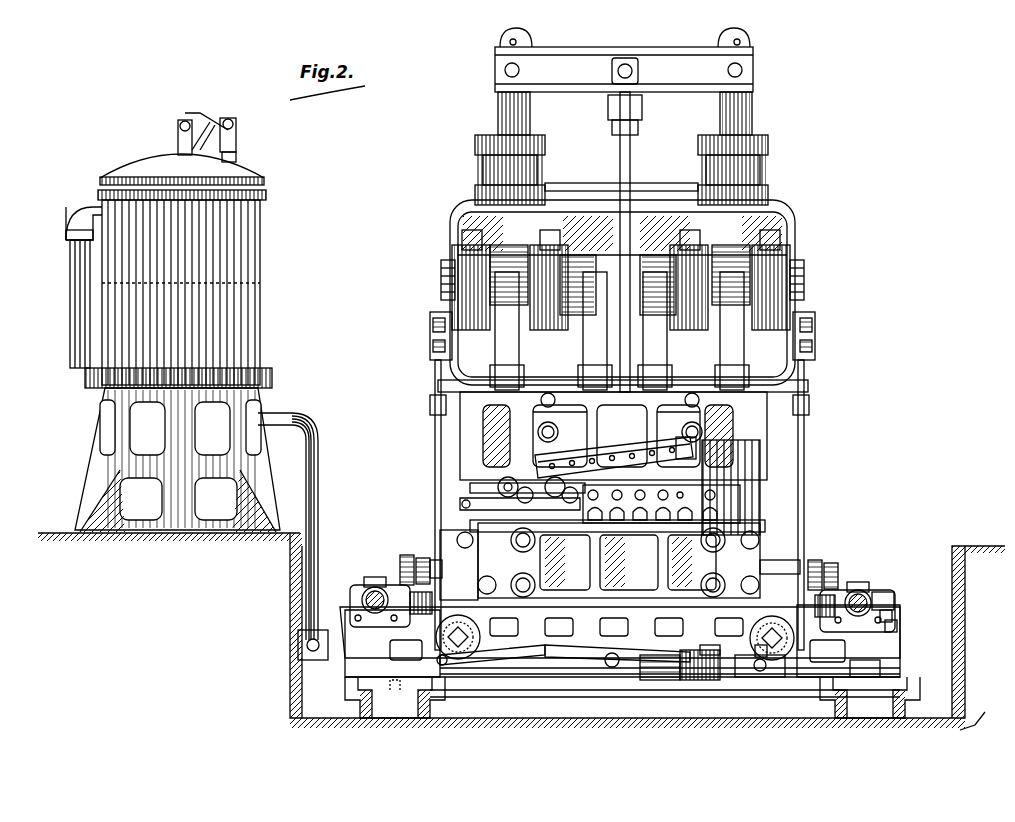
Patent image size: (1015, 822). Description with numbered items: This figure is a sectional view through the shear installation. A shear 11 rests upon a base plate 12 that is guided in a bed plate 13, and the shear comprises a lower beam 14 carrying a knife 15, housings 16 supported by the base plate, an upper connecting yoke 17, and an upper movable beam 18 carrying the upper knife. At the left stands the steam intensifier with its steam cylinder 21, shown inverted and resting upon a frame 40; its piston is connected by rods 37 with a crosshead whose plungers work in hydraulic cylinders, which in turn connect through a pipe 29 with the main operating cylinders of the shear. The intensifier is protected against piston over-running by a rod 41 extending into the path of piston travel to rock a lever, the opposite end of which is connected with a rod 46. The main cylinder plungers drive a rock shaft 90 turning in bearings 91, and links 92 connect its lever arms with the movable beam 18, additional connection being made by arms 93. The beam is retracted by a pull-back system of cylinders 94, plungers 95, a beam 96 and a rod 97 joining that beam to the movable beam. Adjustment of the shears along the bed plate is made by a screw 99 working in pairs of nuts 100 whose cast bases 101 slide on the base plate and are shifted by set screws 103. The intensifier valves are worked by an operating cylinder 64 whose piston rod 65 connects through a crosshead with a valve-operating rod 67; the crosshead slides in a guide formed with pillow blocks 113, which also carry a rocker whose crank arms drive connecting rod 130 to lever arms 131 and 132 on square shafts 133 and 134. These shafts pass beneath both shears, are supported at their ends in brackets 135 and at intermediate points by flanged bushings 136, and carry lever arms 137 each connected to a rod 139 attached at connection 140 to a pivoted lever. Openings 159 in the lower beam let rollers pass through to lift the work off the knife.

The shear 11 is at (478, 428).
The base plate 12 is at (862, 652).
The bed plate 13 is at (392, 705).
The lower beam 14 is at (600, 561).
The knife 15 is at (663, 462).
The housing 16 is at (490, 488).
The upper connecting yoke 17 is at (775, 212).
The upper movable beam 18 is at (617, 418).
The steam cylinder 21 is at (258, 270).
The pipe 29 is at (300, 690).
The rod 37 is at (138, 512).
The frame 40 is at (115, 462).
The rod 41 is at (238, 140).
The rod 46 is at (178, 140).
The operating cylinder 64 is at (705, 685).
The piston rod 65 is at (662, 682).
The valve-operating rod 67 is at (505, 678).
The rock shaft 90 is at (805, 275).
The bearing 91 is at (448, 280).
The link 92 is at (613, 331).
The arm 93 is at (592, 262).
The pull-back cylinder 94 is at (540, 170).
The plunger 95 is at (500, 118).
The beam 96 is at (682, 76).
The rod 97 is at (620, 146).
The screw 99 is at (368, 585).
The nut 100 is at (890, 598).
The cast base 101 is at (892, 614).
The set screw 103 is at (897, 628).
The pillow block 113 is at (615, 668).
The connecting rod 130 is at (555, 700).
The lever arm 131 is at (455, 660).
The lever arm 132 is at (765, 680).
The square shaft 133 is at (620, 642).
The square shaft 134 is at (760, 645).
The bracket 135 is at (790, 705).
The flanged bushing 136 is at (470, 608).
The lever arm 137 is at (880, 668).
The rod 139 is at (435, 498).
The connection 140 is at (430, 332).
The opening 159 is at (490, 488).